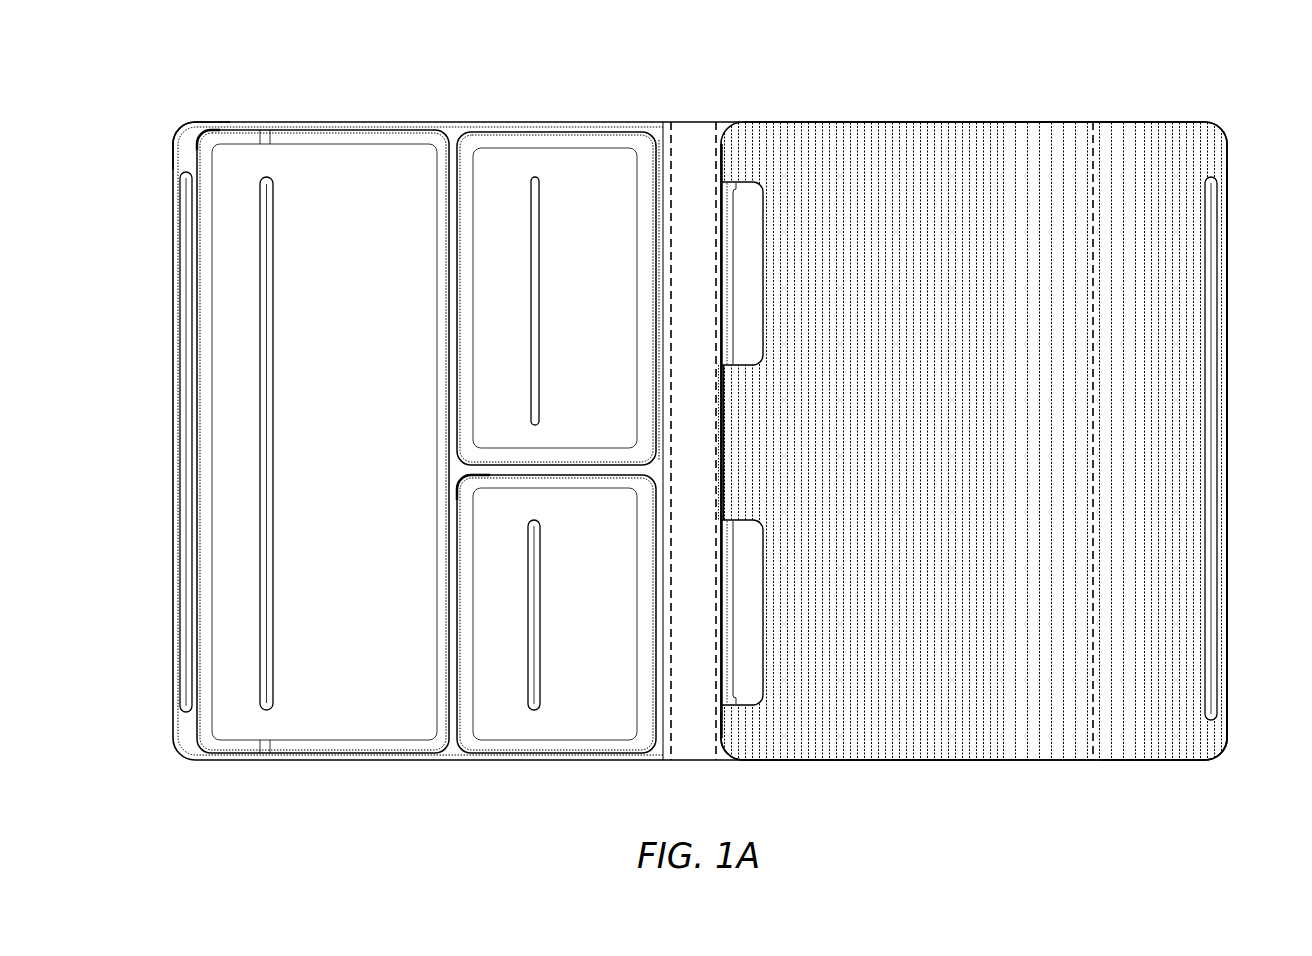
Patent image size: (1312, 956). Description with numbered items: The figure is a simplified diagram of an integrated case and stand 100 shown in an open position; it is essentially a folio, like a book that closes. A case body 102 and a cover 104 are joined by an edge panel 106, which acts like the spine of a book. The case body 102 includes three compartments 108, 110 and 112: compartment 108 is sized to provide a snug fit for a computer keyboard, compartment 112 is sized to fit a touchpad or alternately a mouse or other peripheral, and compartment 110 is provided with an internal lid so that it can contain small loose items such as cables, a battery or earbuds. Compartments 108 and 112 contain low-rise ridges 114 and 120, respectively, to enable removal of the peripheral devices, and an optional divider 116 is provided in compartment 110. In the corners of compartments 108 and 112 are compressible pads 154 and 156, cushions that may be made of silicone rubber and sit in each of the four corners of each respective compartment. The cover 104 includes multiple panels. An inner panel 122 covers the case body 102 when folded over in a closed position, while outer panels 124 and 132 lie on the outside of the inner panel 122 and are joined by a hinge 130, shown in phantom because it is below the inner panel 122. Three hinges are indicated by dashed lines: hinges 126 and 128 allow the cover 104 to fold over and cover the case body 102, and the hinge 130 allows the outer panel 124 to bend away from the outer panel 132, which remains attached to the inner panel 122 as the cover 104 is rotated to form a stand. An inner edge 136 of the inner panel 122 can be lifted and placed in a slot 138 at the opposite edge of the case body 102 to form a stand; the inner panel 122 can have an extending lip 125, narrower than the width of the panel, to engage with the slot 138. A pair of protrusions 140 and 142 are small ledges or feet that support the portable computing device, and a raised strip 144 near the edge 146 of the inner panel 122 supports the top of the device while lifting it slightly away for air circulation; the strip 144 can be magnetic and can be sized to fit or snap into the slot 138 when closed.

The integrated case and stand 100 is at (652, 55).
The case body 102 is at (372, 102).
The cover 104 is at (988, 96).
The edge panel 106 is at (709, 479).
The compartment 108 is at (361, 457).
The compartment 110 is at (611, 200).
The compartment 112 is at (611, 572).
The low-rise ridge 114 is at (275, 636).
The divider 116 is at (538, 360).
The low-rise ridge 120 is at (545, 660).
The inner panel 122 is at (905, 150).
The outer panel 124 is at (893, 760).
The extending lip 125 is at (718, 716).
The hinge 126 is at (670, 262).
The hinge 128 is at (716, 445).
The hinge 130 is at (1092, 715).
The outer panel 132 is at (1155, 760).
The inner edge 136 is at (722, 404).
The slot 138 is at (186, 392).
The protrusion 140 is at (750, 282).
The protrusion 142 is at (750, 597).
The raised strip 144 is at (1210, 238).
The edge 146 is at (1228, 436).
The compressible pad 154 is at (205, 132).
The compressible pad 156 is at (470, 485).